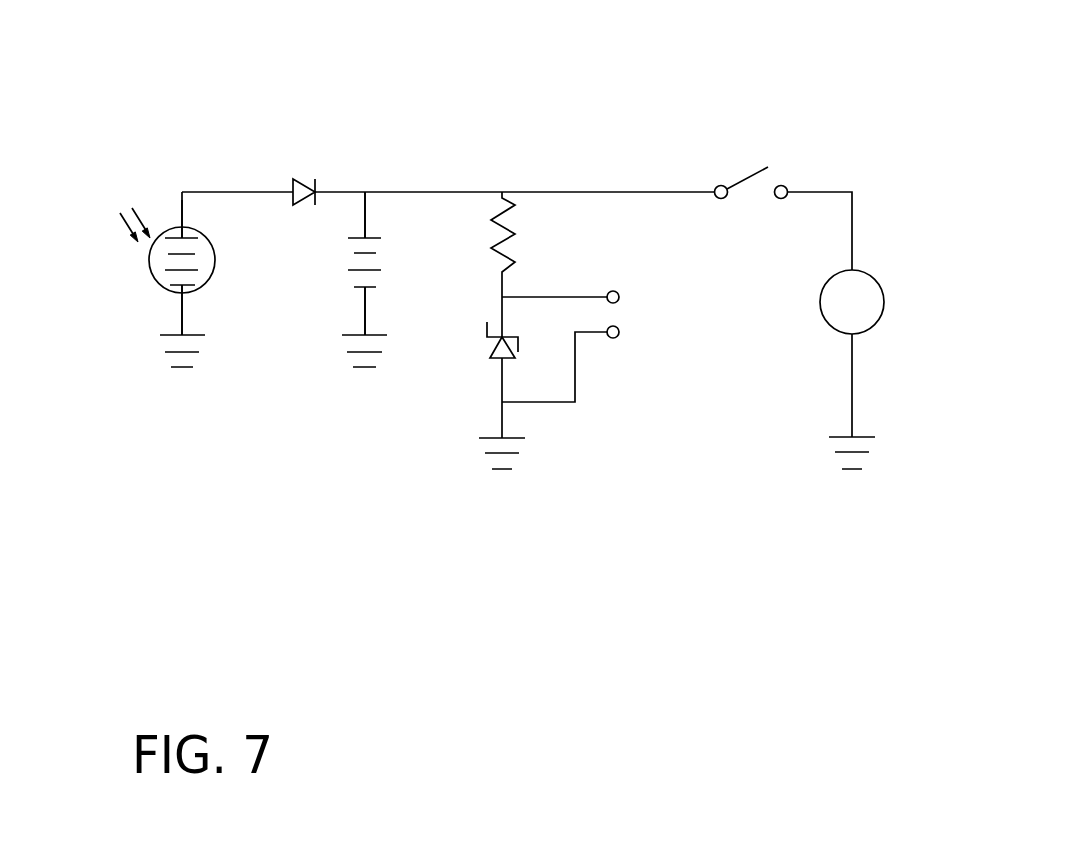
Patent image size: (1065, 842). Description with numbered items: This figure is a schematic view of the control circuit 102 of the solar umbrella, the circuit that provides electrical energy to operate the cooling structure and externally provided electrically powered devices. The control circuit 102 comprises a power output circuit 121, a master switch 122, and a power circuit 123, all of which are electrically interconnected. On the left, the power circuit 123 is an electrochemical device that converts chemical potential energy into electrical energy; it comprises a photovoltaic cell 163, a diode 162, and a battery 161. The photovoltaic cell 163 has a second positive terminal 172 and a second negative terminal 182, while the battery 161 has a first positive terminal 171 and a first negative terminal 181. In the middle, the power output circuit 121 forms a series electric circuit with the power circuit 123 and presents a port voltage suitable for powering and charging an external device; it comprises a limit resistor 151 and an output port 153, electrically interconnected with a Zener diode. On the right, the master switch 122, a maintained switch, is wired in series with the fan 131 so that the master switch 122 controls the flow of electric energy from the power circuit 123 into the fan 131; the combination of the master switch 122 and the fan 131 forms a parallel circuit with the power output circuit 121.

The control circuit 102 is at (962, 148).
The power output circuit 121 is at (575, 461).
The master switch 122 is at (752, 155).
The power circuit 123 is at (297, 412).
The fan 131 is at (885, 302).
The limit resistor 151 is at (515, 236).
The output port 153 is at (614, 290).
The battery 161 is at (340, 258).
The diode 162 is at (299, 178).
The photovoltaic cell 163 is at (166, 291).
The first positive terminal 171 is at (365, 223).
The second positive terminal 172 is at (182, 217).
The first negative terminal 181 is at (365, 307).
The second negative terminal 182 is at (182, 308).